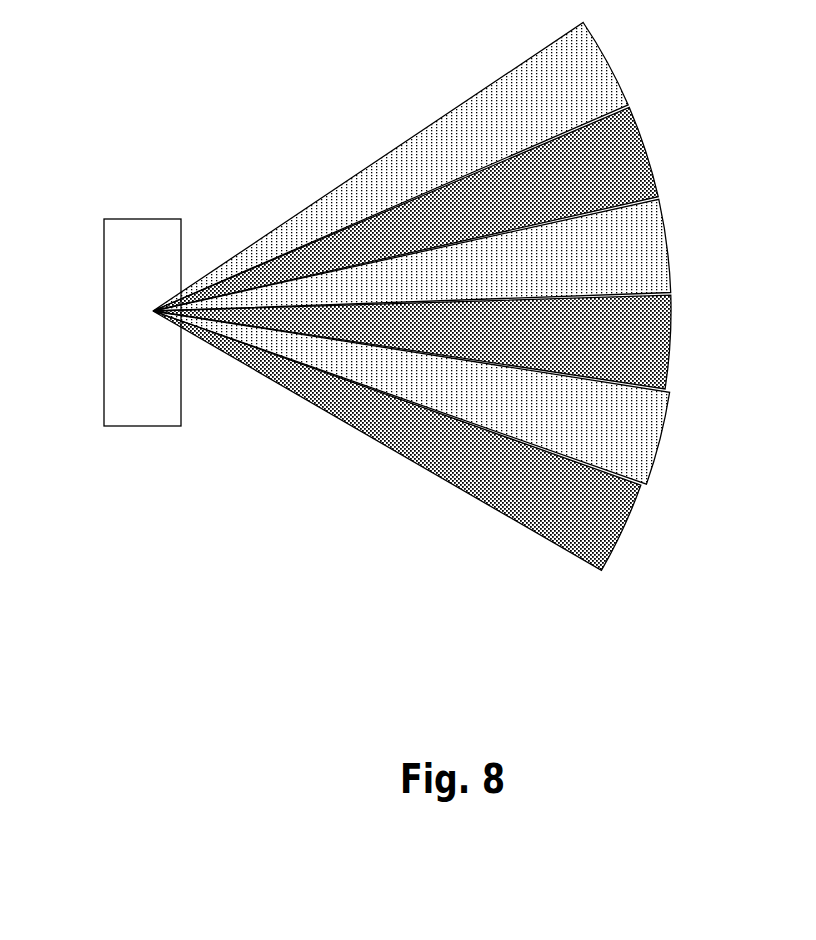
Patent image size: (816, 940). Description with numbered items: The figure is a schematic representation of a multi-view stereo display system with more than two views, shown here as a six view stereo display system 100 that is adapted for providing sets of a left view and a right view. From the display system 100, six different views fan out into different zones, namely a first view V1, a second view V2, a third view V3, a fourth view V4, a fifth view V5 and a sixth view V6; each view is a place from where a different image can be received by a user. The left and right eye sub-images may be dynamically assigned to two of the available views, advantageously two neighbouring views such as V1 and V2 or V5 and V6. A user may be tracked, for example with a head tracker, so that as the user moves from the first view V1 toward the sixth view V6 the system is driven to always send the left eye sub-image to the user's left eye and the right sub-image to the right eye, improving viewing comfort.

The six view stereo display system 100 is at (101, 193).
The first view V1 is at (563, 68).
The second view V2 is at (602, 162).
The third view V3 is at (620, 273).
The fourth view V4 is at (640, 348).
The fifth view V5 is at (640, 443).
The sixth view V6 is at (601, 538).